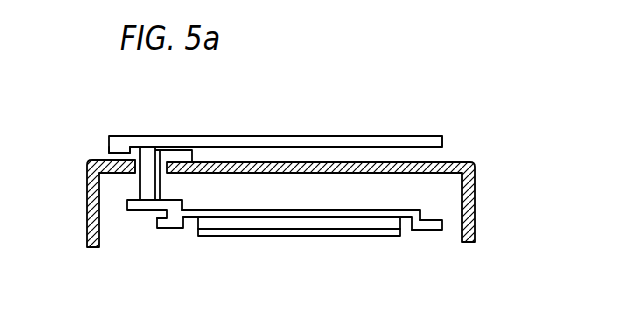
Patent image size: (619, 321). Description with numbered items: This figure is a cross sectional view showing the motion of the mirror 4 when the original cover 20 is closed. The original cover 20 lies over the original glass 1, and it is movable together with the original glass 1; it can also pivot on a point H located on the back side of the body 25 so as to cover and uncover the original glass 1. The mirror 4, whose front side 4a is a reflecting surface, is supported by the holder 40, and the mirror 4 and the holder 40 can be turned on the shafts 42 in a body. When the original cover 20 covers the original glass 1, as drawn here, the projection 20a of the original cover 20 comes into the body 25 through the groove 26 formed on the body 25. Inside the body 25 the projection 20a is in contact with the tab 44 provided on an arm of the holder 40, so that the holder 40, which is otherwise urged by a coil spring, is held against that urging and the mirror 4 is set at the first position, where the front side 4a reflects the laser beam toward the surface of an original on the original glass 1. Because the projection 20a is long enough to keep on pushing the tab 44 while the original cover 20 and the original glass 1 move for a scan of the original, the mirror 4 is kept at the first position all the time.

The original glass 1 is at (345, 136).
The mirror 4 is at (272, 237).
The front side 4a is at (335, 225).
The original cover 20 is at (291, 136).
The projection 20a is at (135, 174).
The body 25 is at (477, 197).
The groove 26 is at (109, 150).
The holder 40 is at (393, 210).
The shafts 42 is at (160, 229).
The tab 44 is at (133, 211).
The point H is at (450, 146).